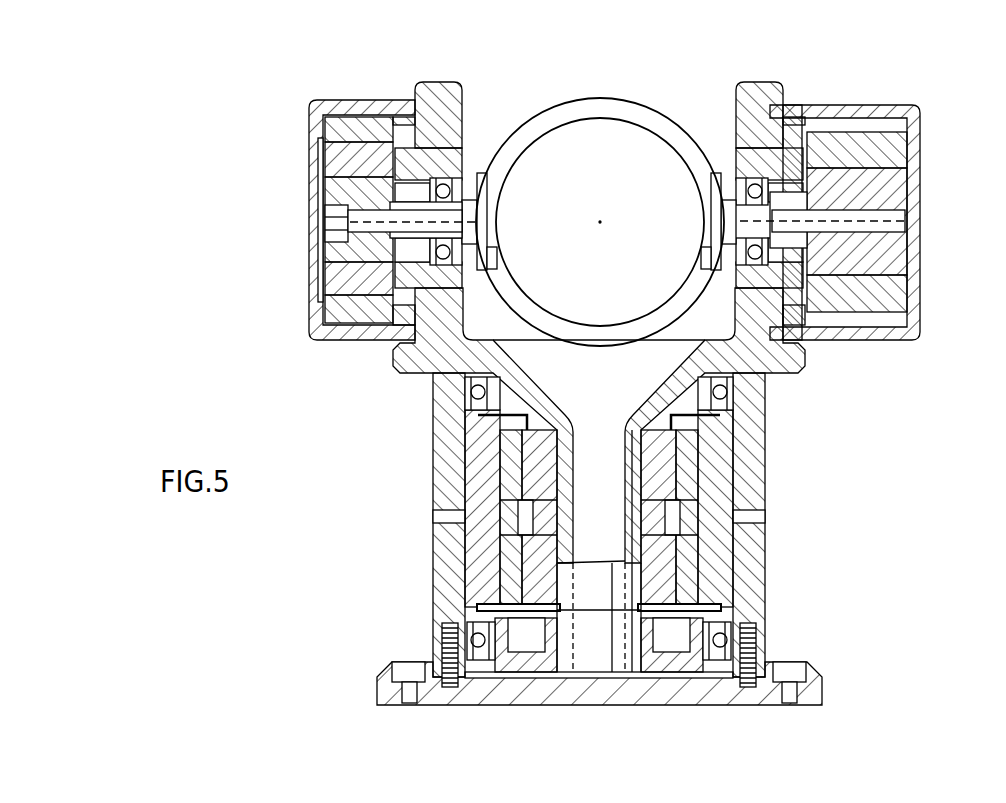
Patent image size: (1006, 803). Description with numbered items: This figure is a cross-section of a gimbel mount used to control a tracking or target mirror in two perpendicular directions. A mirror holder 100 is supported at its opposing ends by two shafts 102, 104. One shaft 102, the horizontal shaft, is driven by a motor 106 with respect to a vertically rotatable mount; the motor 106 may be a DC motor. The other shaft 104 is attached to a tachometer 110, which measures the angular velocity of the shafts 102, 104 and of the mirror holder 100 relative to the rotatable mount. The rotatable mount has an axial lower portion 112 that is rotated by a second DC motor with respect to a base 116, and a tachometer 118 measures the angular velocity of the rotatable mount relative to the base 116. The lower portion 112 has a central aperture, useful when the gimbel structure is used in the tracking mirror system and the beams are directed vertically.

The mirror holder 100 is at (658, 88).
The shaft 102 is at (912, 217).
The shaft 104 is at (443, 215).
The motor 106 is at (857, 287).
The tachometer 110 is at (360, 306).
The axial lower portion 112 is at (623, 443).
The base 116 is at (660, 707).
The tachometer 118 is at (520, 467).